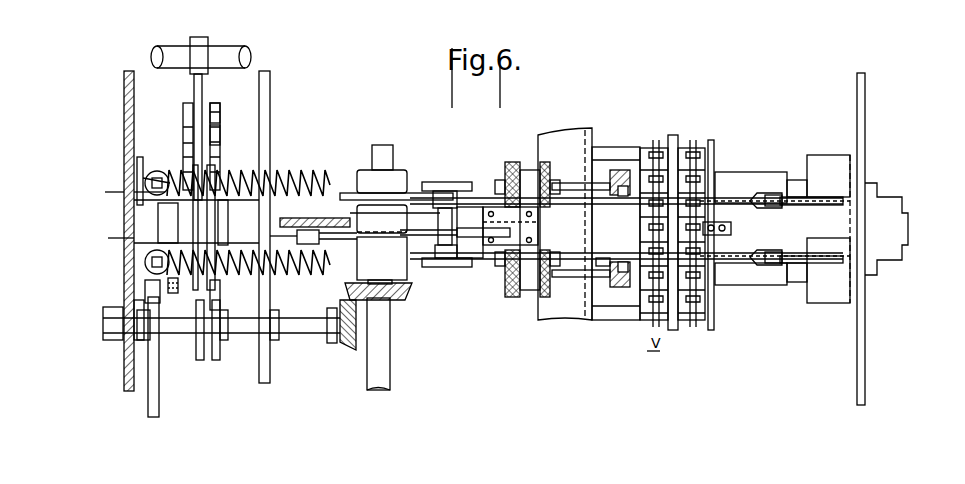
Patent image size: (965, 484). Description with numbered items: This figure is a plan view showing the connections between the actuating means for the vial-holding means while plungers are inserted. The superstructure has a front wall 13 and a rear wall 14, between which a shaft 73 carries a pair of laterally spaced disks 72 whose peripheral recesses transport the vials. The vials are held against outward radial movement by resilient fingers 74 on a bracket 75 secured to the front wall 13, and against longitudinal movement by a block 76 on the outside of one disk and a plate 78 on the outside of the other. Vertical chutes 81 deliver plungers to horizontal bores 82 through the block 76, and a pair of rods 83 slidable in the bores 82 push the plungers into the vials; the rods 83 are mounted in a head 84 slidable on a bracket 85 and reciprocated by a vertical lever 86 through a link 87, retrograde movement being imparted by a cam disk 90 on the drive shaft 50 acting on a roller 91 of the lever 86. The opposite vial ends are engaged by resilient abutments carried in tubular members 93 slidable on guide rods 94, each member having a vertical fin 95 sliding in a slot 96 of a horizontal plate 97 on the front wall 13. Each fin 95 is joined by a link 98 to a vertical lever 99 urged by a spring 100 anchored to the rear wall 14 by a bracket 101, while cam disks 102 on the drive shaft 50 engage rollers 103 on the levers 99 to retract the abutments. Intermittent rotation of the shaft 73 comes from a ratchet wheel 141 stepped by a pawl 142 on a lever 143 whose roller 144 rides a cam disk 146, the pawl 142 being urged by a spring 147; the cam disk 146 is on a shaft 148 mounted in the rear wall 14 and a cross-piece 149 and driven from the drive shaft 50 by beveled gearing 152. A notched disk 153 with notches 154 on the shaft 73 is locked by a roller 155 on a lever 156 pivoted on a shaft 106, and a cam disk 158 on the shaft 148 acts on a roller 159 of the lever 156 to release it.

The front wall 13 is at (865, 356).
The rear wall 14 is at (123, 378).
The drive shaft 50 is at (388, 348).
The disks 72 is at (656, 140).
The shaft 73 is at (120, 238).
The resilient fingers 74 is at (673, 136).
The bracket 75 is at (745, 236).
The block 76 is at (617, 320).
The plate 78 is at (714, 326).
The vertical chutes 81 is at (618, 170).
The bores 82 is at (603, 268).
The rods 83 is at (568, 183).
The head 84 is at (523, 290).
The bracket 85 is at (584, 232).
The vertical lever 86 is at (300, 220).
The link 87 is at (445, 258).
The cam disk 90 is at (305, 245).
The roller 91 is at (283, 245).
The tubular members 93 is at (738, 172).
The guide rods 94 is at (796, 180).
The vertical fin 95 is at (797, 210).
The slots 96 is at (832, 208).
The horizontal plate 97 is at (830, 163).
The link 98 is at (742, 200).
The vertical levers 99 is at (440, 182).
The spring 100 is at (287, 172).
The bracket 101 is at (126, 188).
The cam disks 102 is at (346, 190).
The rollers 103 is at (455, 192).
The shaft 106 is at (185, 50).
The ratchet wheel 141 is at (188, 120).
The pawl 142 is at (172, 175).
The lever 143 is at (163, 228).
The roller 144 is at (155, 287).
The cam disk 146 is at (153, 417).
The spring 147 is at (195, 232).
The shaft 148 is at (242, 333).
The cross-piece 149 is at (270, 375).
The beveled gearing 152 is at (340, 337).
The disk 153 is at (220, 150).
The notches 154 is at (218, 108).
The roller 155 is at (220, 135).
The lever 156 is at (200, 358).
The cam disk 158 is at (216, 360).
The roller 159 is at (220, 302).